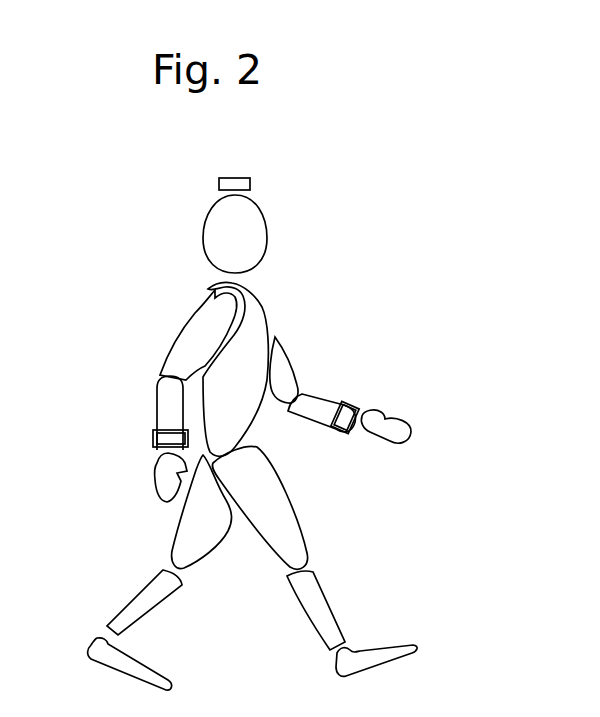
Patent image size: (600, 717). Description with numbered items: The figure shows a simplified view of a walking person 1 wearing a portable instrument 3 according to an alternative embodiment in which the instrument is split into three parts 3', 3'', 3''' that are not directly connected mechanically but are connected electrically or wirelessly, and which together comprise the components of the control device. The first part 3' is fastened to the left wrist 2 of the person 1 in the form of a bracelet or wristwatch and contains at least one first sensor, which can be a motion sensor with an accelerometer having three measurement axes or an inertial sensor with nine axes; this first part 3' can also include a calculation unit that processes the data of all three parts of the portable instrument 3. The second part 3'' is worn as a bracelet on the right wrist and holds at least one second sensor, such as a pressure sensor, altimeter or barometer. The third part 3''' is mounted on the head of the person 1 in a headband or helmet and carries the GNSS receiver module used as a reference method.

The person 1 is at (160, 334).
The left wrist 2 is at (408, 423).
The portable instrument 3 is at (225, 273).
The first part of the portable instrument 3' is at (352, 389).
The second part of the portable instrument 3'' is at (133, 442).
The third part of the portable instrument 3''' is at (189, 156).